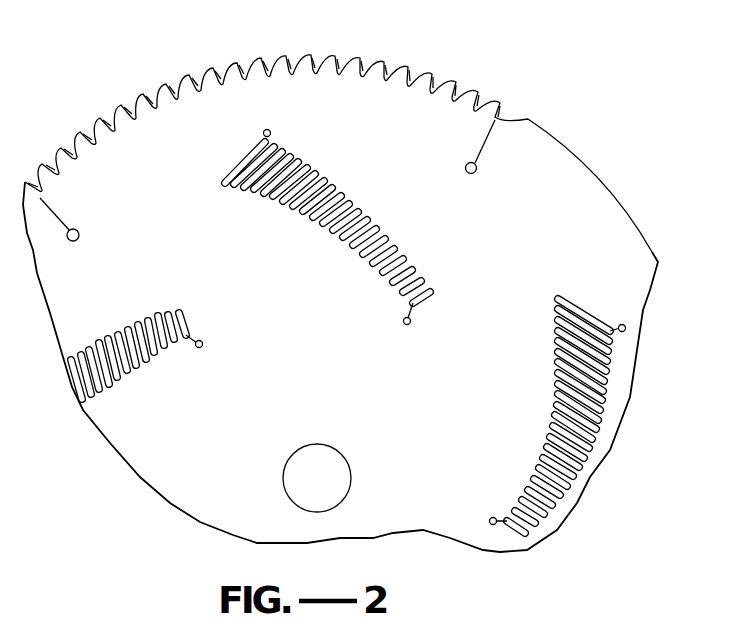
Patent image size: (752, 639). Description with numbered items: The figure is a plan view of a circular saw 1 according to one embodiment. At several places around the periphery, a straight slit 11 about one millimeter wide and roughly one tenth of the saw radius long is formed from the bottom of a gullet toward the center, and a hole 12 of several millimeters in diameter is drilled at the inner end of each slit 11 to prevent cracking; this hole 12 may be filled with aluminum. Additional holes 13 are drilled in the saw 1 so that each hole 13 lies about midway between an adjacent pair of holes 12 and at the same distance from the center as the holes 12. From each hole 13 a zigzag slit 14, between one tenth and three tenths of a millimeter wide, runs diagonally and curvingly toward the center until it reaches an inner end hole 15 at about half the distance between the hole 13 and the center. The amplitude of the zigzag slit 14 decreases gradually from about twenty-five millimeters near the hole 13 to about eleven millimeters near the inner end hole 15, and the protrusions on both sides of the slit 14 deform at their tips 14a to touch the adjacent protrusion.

The circular saw 1 is at (631, 243).
The slit 11 is at (489, 148).
The hole 12 is at (477, 169).
The hole 13 is at (267, 129).
The zigzag slit 14 is at (246, 154).
The tips 14a is at (338, 180).
The inner end hole 15 is at (410, 318).